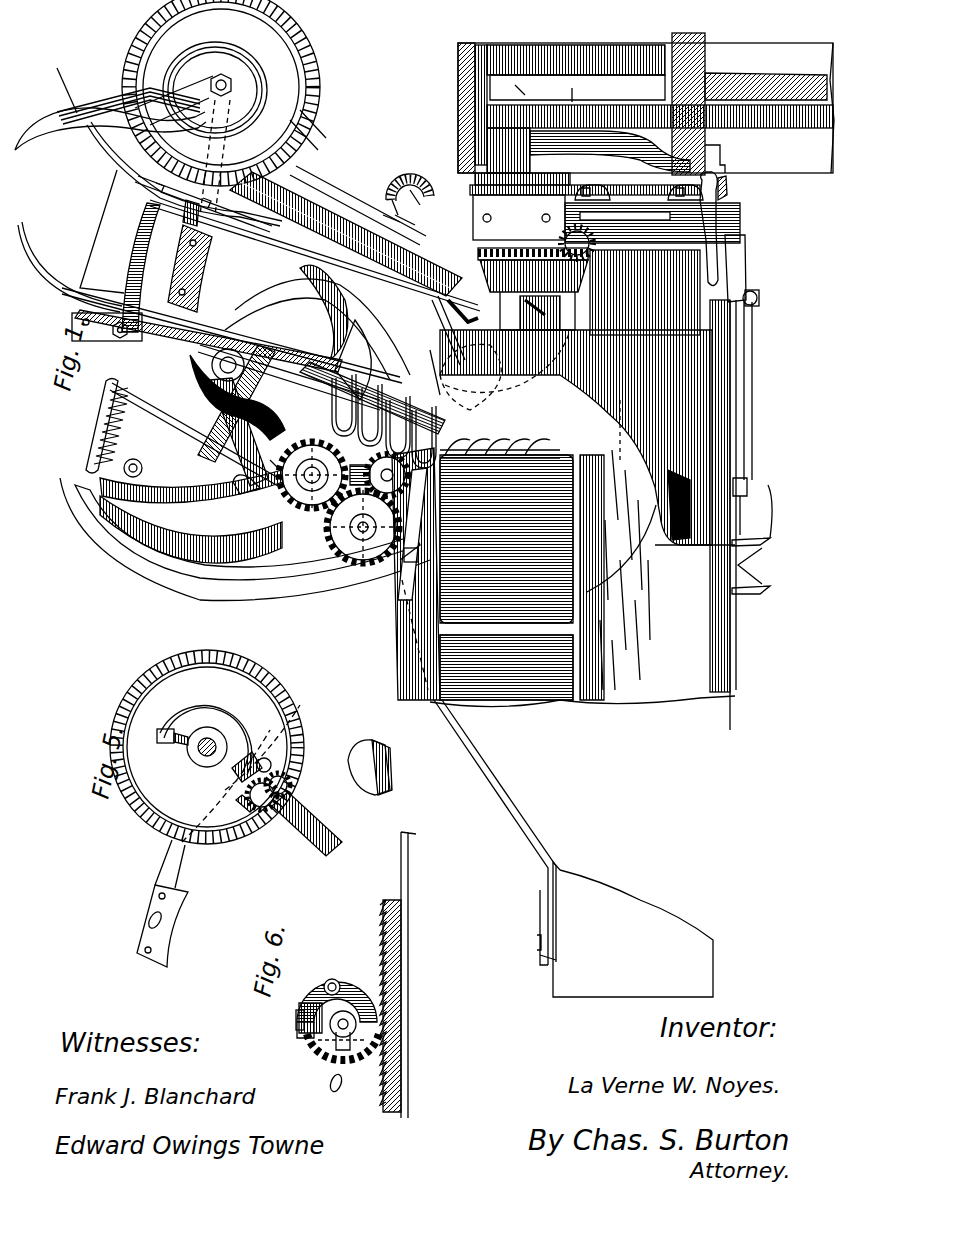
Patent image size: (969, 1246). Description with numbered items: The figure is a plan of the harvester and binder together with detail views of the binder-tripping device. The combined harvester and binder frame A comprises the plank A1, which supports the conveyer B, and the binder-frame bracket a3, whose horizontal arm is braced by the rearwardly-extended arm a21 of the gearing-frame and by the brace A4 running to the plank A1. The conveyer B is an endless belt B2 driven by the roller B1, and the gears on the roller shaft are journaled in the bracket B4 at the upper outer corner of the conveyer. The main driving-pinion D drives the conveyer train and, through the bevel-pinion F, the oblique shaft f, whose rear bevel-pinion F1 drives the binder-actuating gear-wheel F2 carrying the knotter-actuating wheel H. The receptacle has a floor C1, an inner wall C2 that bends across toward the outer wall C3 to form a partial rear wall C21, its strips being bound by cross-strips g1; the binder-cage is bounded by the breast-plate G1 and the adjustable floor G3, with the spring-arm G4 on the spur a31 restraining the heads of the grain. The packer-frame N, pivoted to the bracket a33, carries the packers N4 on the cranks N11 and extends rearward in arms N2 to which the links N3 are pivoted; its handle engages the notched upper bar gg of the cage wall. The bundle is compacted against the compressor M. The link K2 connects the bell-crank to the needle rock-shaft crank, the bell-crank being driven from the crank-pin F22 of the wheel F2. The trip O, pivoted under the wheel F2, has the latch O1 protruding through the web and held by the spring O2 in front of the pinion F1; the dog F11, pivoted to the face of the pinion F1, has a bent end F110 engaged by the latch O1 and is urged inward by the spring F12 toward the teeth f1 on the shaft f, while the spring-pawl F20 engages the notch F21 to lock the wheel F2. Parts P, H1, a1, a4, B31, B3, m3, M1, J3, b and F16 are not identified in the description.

In FIG. 1, the binder-actuating gear-wheel F2 is at (205, 70).
In FIG. 5, the binder-actuating gear-wheel F2 is at (190, 660).
In FIG. 1, the knotter-actuating wheel H is at (255, 118).
In FIG. 1, the hand lever P is at (58, 130).
In FIG. 1, the bevel-pinion F1 is at (300, 108).
In FIG. 5, the bevel-pinion F1 is at (365, 767).
In FIG. 1, the compressor M is at (120, 251).
In FIG. 1, the trip O is at (196, 242).
In FIG. 5, the trip O is at (404, 870).
In FIG. 1, the breast-plate or outer wall G1 is at (307, 243).
In FIG. 1, the combined harvester and binder frame A is at (335, 195).
In FIG. 1, the binder-frame bracket a3 is at (332, 160).
In FIG. 1, the rearwardly-extended arm of the gearing-frame a21 is at (410, 230).
In FIG. 1, the oblique shaft f is at (440, 245).
In FIG. 5, the oblique shaft f is at (330, 830).
In FIG. 6, the oblique shaft f is at (322, 1070).
In FIG. 1, the main driving-pinion D is at (646, 109).
In FIG. 1, the plate lug a4 is at (640, 205).
In FIG. 1, the slide block H1 is at (500, 215).
In FIG. 1, the bevel gear a1 is at (480, 257).
In FIG. 1, the upright arm or spur a31 is at (430, 318).
In FIG. 1, the frame posts B31 is at (672, 548).
In FIG. 1, the outer wall of the receptacle C3 is at (626, 412).
In FIG. 1, the floor C1 is at (500, 370).
In FIG. 1, the partial rear wall C21 is at (427, 375).
In FIG. 1, the cross-strips g1 is at (500, 470).
In FIG. 1, the rollers B3 is at (512, 632).
In FIG. 1, the plank A1 is at (655, 570).
In FIG. 1, the packers N4 is at (330, 360).
In FIG. 1, the adjustable floor G3 is at (272, 266).
In FIG. 1, the spring-arm G4 is at (265, 288).
In FIG. 1, the notched upper bar gg is at (208, 339).
In FIG. 1, the bolt plate m3 is at (105, 342).
In FIG. 1, the inner wall of the receptacle C2 is at (215, 345).
In FIG. 1, the cranks of the packer crank-shaft N11 is at (300, 372).
In FIG. 1, the pivot bar M1 is at (223, 407).
In FIG. 1, the links N3 is at (184, 433).
In FIG. 1, the hatched bar J3 is at (100, 388).
In FIG. 1, the bracket a33 is at (200, 460).
In FIG. 1, the arms of the packer-frame N2 is at (160, 485).
In FIG. 1, the packer-frame N is at (250, 480).
In FIG. 1, the conveyer B is at (309, 475).
In FIG. 1, the pinion b is at (374, 474).
In FIG. 1, the endless belt B2 is at (362, 527).
In FIG. 1, the bracket B4 is at (412, 580).
In FIG. 1, the roller B1 is at (412, 378).
In FIG. 1, the brace A4 is at (490, 770).
In FIG. 5, the spring O2 is at (181, 729).
In FIG. 5, the crank-pin F22 is at (190, 770).
In FIG. 5, the bent end of the dog F110 is at (240, 790).
In FIG. 6, the bent end of the dog F110 is at (355, 1060).
In FIG. 5, the bevel-pinion F is at (289, 814).
In FIG. 5, the spring-pawl F20 is at (308, 826).
In FIG. 5, the notch F21 is at (382, 775).
In FIG. 5, the link K2 is at (390, 905).
In FIG. 6, the dog F11 is at (335, 990).
In FIG. 6, the radial projections or teeth f1 is at (318, 995).
In FIG. 6, the block F16 is at (300, 1010).
In FIG. 6, the spring F12 is at (315, 1045).
In FIG. 6, the tooth or finger (latch) O1 is at (339, 1084).